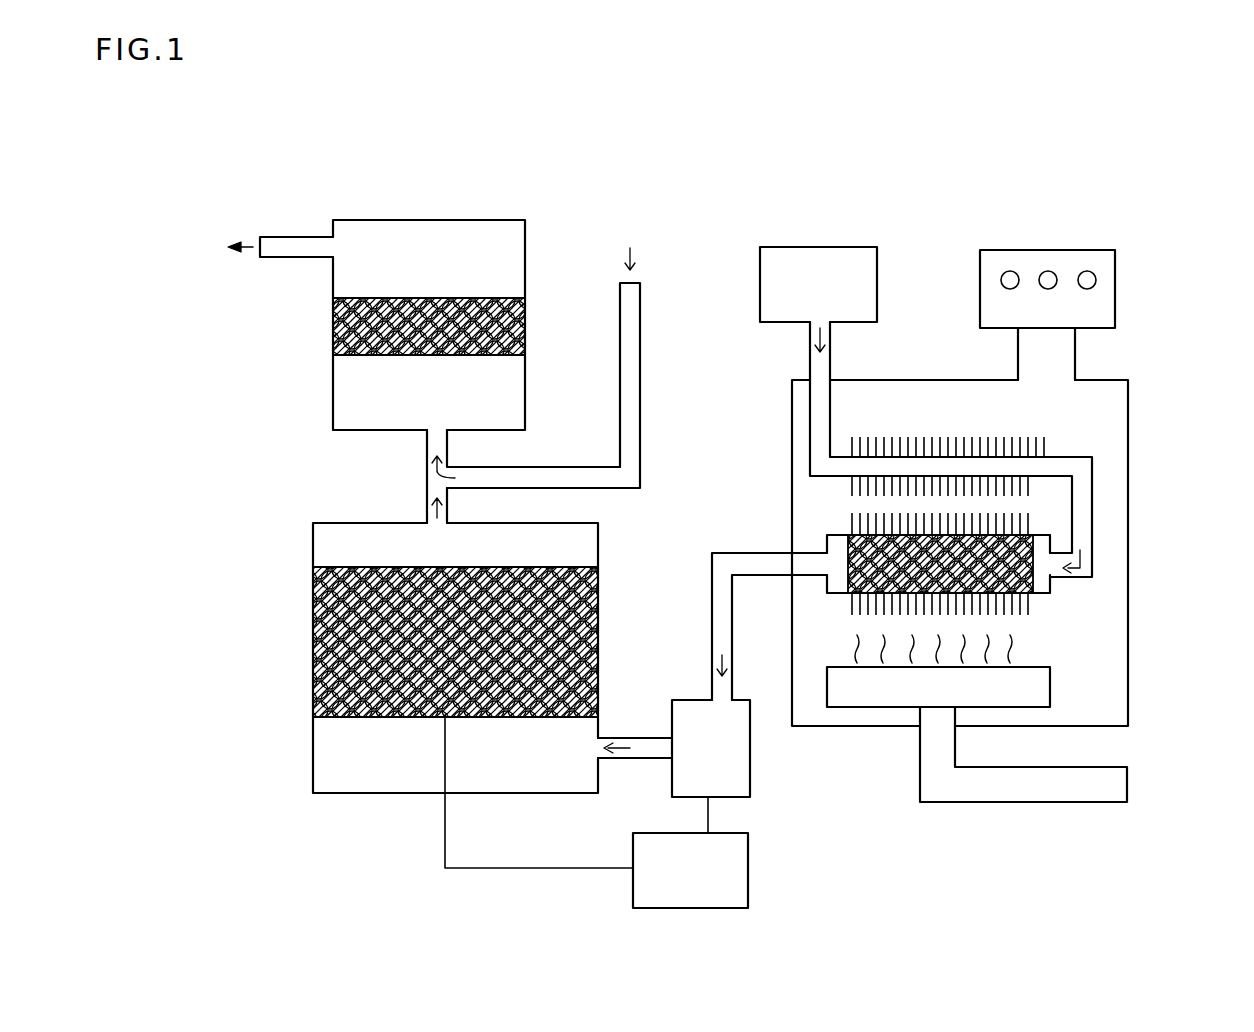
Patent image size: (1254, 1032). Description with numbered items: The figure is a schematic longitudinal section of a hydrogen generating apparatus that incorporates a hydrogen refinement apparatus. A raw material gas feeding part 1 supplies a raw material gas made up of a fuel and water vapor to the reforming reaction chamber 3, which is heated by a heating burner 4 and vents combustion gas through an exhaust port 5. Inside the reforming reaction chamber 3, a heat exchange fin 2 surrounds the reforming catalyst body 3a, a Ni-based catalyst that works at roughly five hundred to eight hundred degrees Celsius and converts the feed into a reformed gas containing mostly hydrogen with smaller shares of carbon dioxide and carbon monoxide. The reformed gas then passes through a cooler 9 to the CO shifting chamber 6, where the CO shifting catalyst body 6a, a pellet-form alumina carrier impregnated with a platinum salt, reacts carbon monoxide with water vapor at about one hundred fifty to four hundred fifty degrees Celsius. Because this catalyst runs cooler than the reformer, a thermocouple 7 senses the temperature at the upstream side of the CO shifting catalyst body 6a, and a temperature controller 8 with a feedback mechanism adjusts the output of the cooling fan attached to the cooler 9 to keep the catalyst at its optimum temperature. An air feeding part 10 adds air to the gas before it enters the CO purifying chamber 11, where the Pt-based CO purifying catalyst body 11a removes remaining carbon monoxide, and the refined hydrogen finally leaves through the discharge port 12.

The raw material gas feeding part 1 is at (786, 247).
The heat exchange fin 2 is at (1050, 447).
The reforming reaction chamber 3 is at (1132, 440).
The reforming catalyst body 3a is at (1050, 580).
The heating burner 4 is at (897, 690).
The exhaust port 5 is at (1050, 270).
The CO shifting chamber 6 is at (308, 735).
The CO shifting catalyst body 6a is at (433, 717).
The thermocouple 7 is at (490, 868).
The temperature controller 8 is at (740, 878).
The cooler 9 is at (748, 765).
The air feeding part 10 is at (620, 312).
The CO purifying chamber 11 is at (333, 363).
The CO purifying catalyst body 11a is at (418, 298).
The discharge port 12 is at (290, 235).